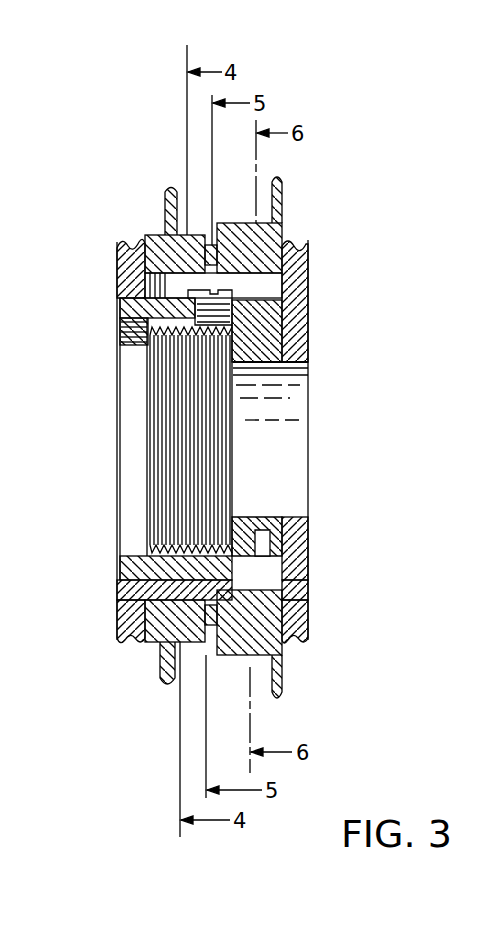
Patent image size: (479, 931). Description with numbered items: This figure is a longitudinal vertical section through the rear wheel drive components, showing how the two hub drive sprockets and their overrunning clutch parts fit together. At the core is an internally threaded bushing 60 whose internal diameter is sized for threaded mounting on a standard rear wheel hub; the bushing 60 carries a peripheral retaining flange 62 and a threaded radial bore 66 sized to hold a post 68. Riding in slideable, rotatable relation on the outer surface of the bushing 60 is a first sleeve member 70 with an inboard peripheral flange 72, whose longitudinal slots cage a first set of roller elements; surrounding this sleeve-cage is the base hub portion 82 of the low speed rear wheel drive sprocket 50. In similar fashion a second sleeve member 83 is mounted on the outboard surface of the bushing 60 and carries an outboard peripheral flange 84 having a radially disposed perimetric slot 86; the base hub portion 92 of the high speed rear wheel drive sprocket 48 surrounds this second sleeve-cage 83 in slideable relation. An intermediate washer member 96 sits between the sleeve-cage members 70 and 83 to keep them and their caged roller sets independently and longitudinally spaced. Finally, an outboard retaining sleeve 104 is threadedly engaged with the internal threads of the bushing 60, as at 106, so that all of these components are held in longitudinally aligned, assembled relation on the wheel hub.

The high speed rear wheel drive sprocket 48 is at (285, 195).
The low speed rear wheel drive sprocket 50 is at (160, 190).
The threaded bushing 60 is at (150, 556).
The peripheral retaining flange 62 is at (125, 296).
The threaded radial bore 66 is at (232, 328).
The post 68 is at (300, 280).
The first sleeve member 70 is at (117, 592).
The inboard peripheral flange 72 is at (117, 262).
The base hub portion 82 is at (165, 245).
The second sleeve member 83 is at (280, 583).
The outboard peripheral flange 84 is at (300, 606).
The perimetric slot 86 is at (292, 640).
The base hub portion 92 is at (262, 248).
The intermediate washer member 96 is at (175, 665).
The outboard retaining sleeve 104 is at (308, 339).
The threaded engagement 106 is at (262, 540).